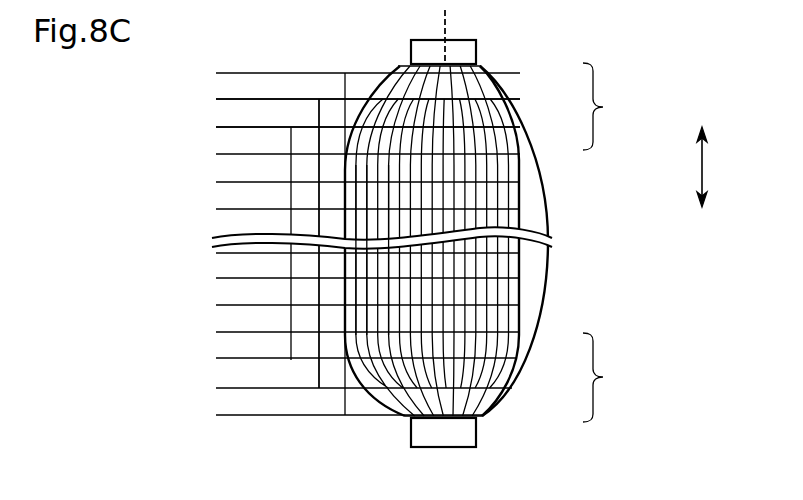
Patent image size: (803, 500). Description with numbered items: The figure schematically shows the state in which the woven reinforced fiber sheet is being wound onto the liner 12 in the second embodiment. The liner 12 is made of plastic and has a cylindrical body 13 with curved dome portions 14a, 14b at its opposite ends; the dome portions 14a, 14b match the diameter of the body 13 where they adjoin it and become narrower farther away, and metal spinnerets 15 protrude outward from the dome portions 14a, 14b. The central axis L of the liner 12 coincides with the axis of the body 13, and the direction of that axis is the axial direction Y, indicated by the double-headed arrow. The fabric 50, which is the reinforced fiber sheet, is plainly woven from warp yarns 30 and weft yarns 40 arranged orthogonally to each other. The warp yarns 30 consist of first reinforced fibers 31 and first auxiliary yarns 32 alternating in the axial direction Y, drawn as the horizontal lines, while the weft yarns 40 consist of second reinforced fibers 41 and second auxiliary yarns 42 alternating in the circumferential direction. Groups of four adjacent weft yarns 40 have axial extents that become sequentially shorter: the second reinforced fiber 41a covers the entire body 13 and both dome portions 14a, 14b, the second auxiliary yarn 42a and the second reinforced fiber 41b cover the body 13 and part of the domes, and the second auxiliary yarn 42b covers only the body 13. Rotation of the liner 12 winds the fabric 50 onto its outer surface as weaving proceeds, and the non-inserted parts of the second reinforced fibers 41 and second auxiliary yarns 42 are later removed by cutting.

The liner 12 is at (476, 38).
The body 13 is at (583, 157).
The dome portion 14a is at (618, 106).
The dome portion 14b is at (618, 377).
The spinneret 15 is at (411, 53).
The warp yarn 30 is at (368, 244).
The first reinforced fiber 31 is at (232, 99).
The first auxiliary yarn 32 is at (245, 127).
The weft yarn 40 is at (432, 241).
The second reinforced fiber 41 is at (343, 87).
The second auxiliary yarn 42 is at (318, 138).
The second reinforced fiber 41a is at (398, 397).
The second reinforced fiber 41b is at (368, 345).
The second auxiliary yarn 42a is at (387, 376).
The second auxiliary yarn 42b is at (353, 317).
The fabric 50 is at (521, 112).
The central axis L is at (445, 24).
The axial direction Y is at (703, 157).